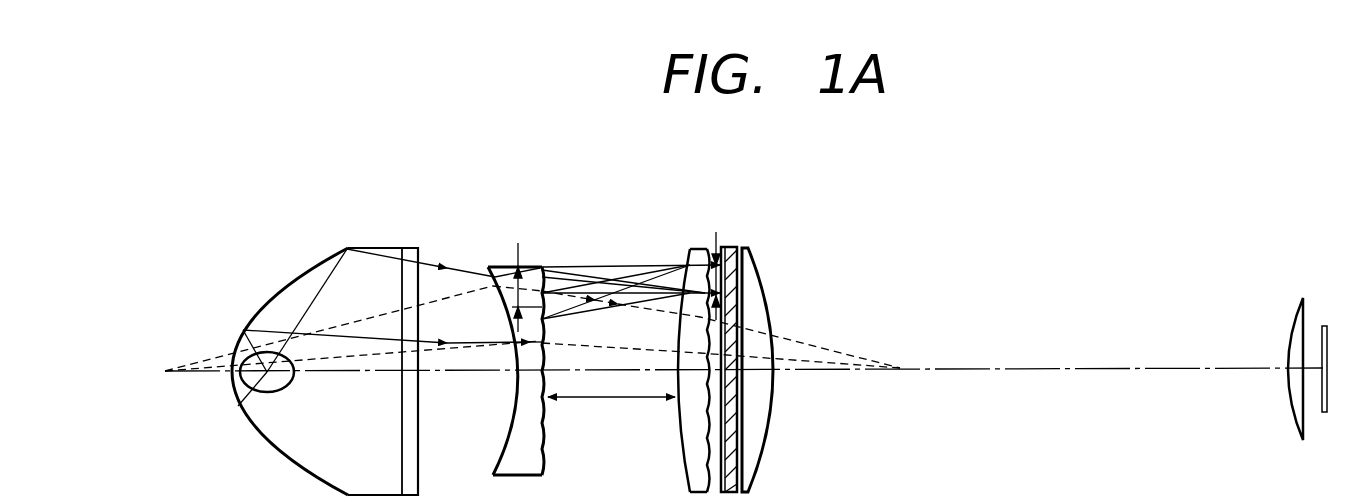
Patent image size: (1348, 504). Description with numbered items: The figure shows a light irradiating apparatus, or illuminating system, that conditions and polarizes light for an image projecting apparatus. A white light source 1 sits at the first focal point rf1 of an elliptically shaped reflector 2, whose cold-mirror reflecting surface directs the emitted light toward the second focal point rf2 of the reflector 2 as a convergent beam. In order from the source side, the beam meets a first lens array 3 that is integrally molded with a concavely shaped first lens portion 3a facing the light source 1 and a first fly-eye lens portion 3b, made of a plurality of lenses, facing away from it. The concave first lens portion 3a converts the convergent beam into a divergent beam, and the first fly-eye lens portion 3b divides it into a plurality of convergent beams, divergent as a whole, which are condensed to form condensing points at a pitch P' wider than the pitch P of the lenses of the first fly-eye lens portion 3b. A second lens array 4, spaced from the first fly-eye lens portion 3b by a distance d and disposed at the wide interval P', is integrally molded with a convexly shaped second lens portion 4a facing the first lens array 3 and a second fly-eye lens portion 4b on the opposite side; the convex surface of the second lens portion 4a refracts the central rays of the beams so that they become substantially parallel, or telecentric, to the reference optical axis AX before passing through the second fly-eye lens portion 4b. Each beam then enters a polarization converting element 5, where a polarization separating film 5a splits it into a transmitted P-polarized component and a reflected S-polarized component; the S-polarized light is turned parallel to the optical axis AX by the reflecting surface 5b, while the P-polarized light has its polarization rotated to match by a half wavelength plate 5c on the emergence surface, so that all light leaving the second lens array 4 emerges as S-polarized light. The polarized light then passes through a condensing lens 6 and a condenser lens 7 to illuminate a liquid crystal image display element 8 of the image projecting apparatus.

The white light source 1 is at (242, 405).
The elliptically shaped reflector 2 is at (332, 252).
The first lens array 3 is at (513, 309).
The first lens portion 3a is at (500, 300).
The first fly-eye lens portion 3b is at (542, 330).
The second lens array 4 is at (653, 303).
The second lens portion 4a is at (680, 290).
The second fly-eye lens portion 4b is at (703, 268).
The polarization converting element 5 is at (740, 334).
The polarization separating film 5a is at (720, 462).
The reflecting surface 5b is at (720, 422).
The half wavelength plate 5c is at (740, 448).
The condensing lens 6 is at (756, 288).
The condenser lens 7 is at (1300, 297).
The liquid crystal image display element 8 is at (1327, 325).
The pitch of the lenses of the first fly-eye lens portion P is at (526, 274).
The pitch of the condensing points P' is at (716, 261).
The distance d between lens arrays d is at (611, 384).
The first focal point rf1 is at (268, 393).
The second focal point rf2 is at (902, 368).
The reference optical axis AX is at (1020, 367).